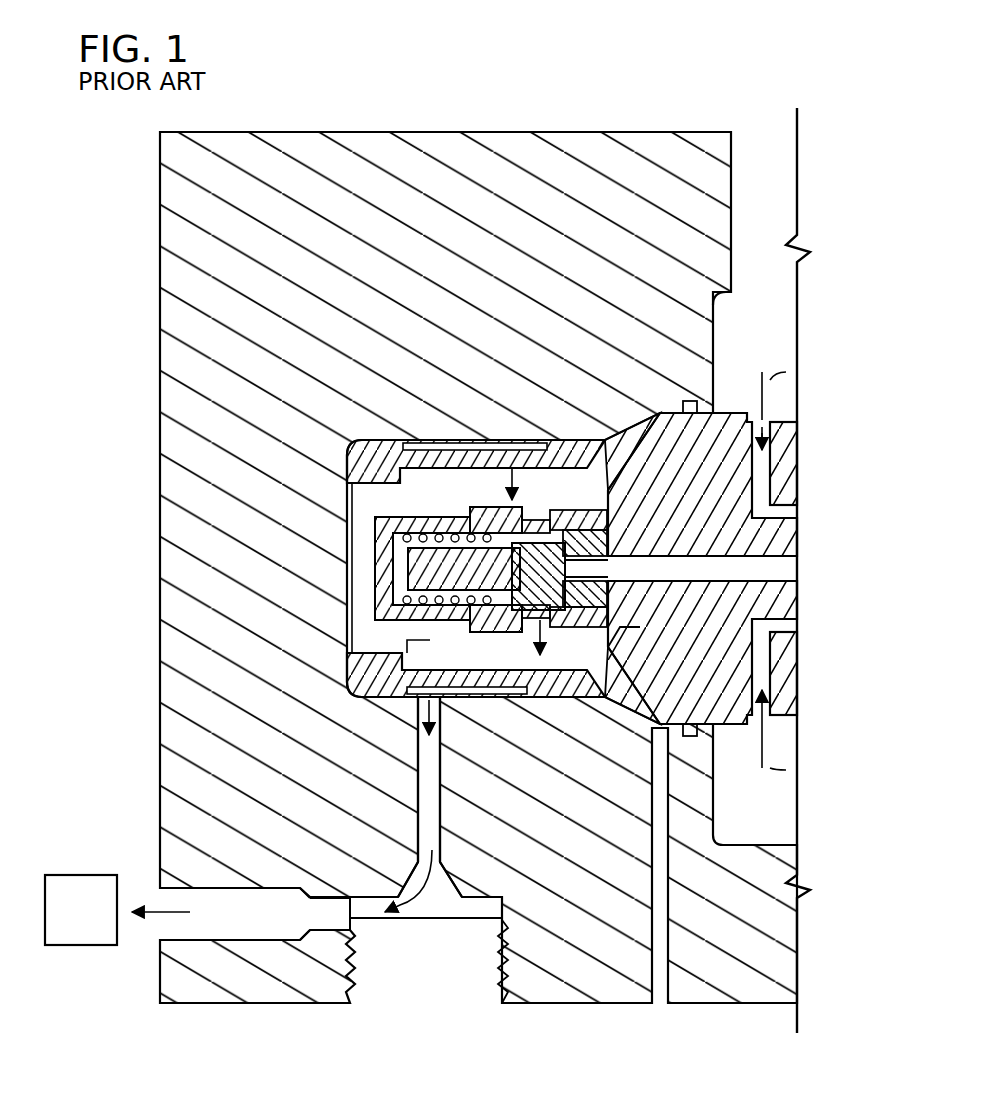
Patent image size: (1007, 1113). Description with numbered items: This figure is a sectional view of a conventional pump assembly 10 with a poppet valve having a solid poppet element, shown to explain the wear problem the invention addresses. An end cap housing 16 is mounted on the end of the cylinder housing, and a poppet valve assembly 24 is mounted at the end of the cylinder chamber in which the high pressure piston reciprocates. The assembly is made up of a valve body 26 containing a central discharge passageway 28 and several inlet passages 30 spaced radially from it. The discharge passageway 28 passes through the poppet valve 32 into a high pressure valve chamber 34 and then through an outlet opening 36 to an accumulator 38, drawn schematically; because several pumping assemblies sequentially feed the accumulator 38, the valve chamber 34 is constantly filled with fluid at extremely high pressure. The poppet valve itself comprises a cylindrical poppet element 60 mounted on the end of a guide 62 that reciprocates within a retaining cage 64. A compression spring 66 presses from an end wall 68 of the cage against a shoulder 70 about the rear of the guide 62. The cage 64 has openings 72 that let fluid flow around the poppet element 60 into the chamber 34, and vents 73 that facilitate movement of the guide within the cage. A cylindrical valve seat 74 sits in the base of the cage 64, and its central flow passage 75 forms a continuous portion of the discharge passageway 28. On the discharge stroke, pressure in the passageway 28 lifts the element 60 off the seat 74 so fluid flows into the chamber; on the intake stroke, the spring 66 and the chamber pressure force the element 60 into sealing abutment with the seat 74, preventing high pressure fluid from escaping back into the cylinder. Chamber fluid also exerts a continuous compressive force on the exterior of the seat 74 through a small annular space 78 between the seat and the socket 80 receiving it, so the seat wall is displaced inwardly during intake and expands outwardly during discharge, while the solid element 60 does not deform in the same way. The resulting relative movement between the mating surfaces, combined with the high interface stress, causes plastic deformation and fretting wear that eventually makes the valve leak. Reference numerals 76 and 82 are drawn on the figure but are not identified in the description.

The pump assembly 10 is at (134, 184).
The end cap housing 16 is at (165, 272).
The poppet valve assembly 24 is at (810, 432).
The valve body 26 is at (792, 428).
The central discharge passageway 28 is at (798, 566).
The inlet passages 30 is at (790, 506).
The poppet valve 32 is at (518, 478).
The high pressure valve chamber 34 is at (356, 492).
The outlet opening 36 is at (422, 778).
The accumulator 38 is at (90, 878).
The poppet element 60 is at (540, 512).
The guide 62 is at (412, 568).
The retaining cage 64 is at (392, 626).
The compression spring 66 is at (398, 606).
The end wall 68 is at (392, 522).
The shoulder 70 is at (480, 500).
The openings 72 is at (540, 660).
The vents 73 is at (440, 642).
The valve seat 74 is at (592, 505).
The central flow passage 75 is at (592, 580).
The seal ring 76 is at (582, 636).
The annular space 78 is at (594, 594).
The socket 80 is at (582, 612).
The valve seat 82 is at (580, 540).